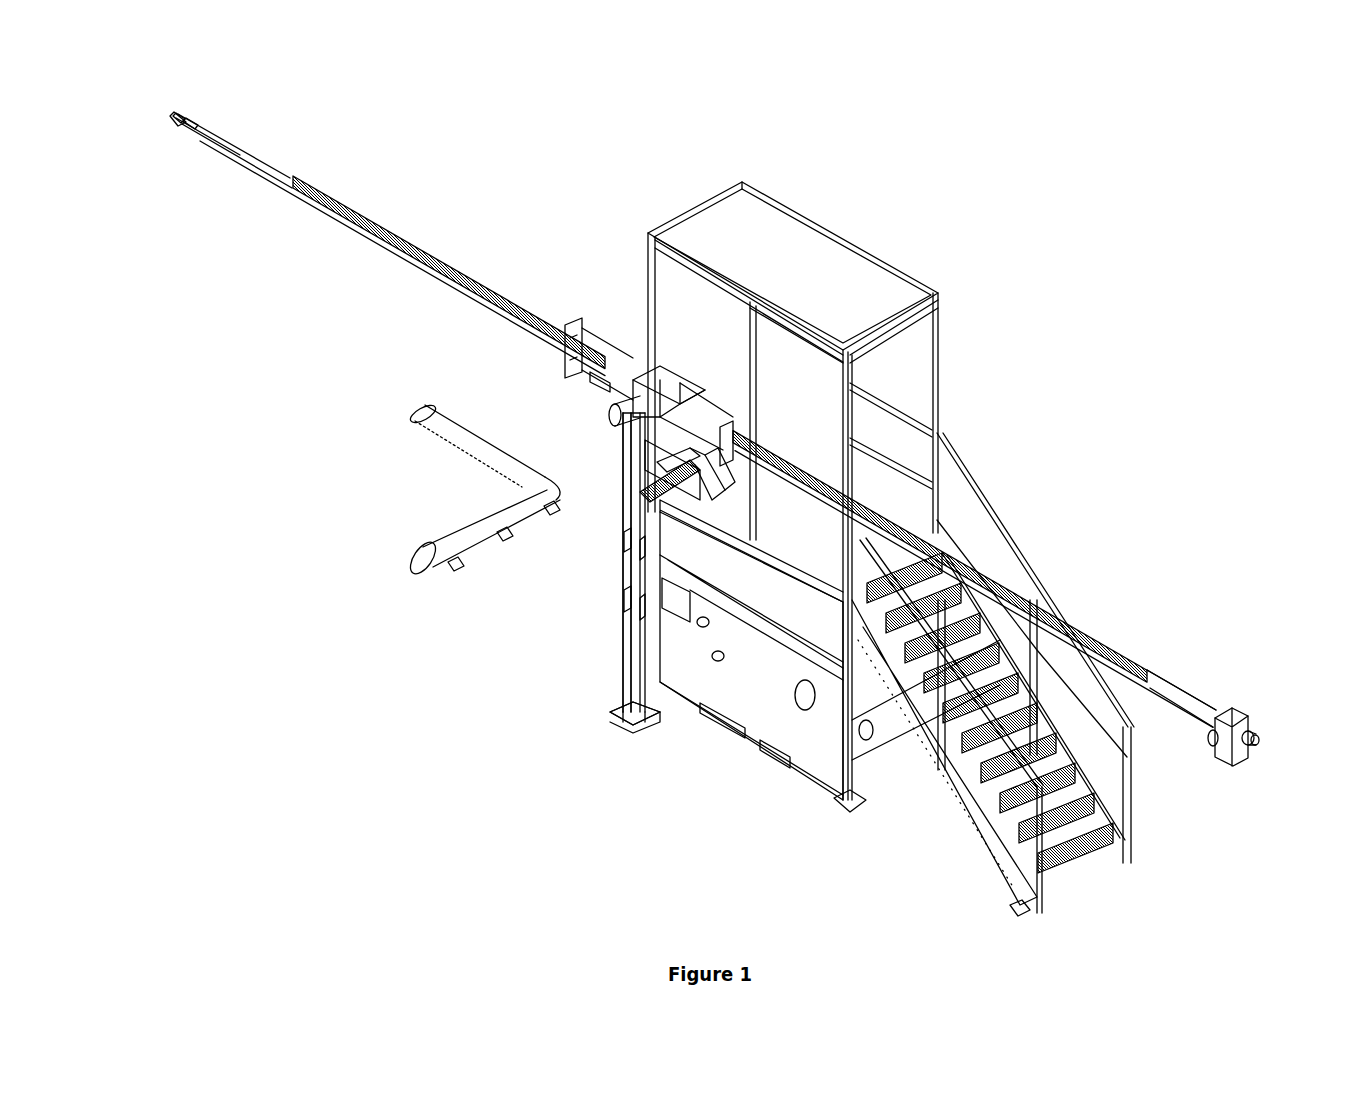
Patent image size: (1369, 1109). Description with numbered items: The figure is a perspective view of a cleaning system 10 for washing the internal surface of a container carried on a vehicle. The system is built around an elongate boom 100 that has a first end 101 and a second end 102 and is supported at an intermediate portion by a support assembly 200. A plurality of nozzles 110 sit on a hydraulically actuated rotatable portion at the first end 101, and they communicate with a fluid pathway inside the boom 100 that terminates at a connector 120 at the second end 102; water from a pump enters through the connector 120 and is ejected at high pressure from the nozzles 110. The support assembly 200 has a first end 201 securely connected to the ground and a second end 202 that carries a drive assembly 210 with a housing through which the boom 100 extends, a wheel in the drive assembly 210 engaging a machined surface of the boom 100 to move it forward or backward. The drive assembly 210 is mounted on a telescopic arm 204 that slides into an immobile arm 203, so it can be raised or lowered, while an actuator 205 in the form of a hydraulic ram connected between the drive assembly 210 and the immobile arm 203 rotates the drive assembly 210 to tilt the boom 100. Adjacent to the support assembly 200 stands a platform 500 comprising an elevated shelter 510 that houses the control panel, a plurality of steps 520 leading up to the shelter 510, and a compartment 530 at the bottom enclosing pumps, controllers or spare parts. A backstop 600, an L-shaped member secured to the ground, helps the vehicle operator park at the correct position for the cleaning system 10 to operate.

The cleaning system 10 is at (1032, 166).
The elongate boom 100 is at (433, 265).
The first end of the boom 101 is at (152, 172).
The second end of the boom 102 is at (1250, 682).
The nozzles 110 is at (175, 116).
The connector 120 is at (1238, 745).
The support assembly 200 is at (586, 608).
The first end of the support assembly 201 is at (600, 732).
The second end of the support assembly 202 is at (585, 416).
The immobile arm 203 is at (627, 650).
The telescopic arm 204 is at (628, 465).
The actuator 205 is at (628, 500).
The drive assembly 210 is at (602, 373).
The platform 500 is at (975, 262).
The shelter 510 is at (898, 382).
The steps 520 is at (962, 768).
The compartment 530 is at (713, 682).
The backstop 600 is at (433, 546).